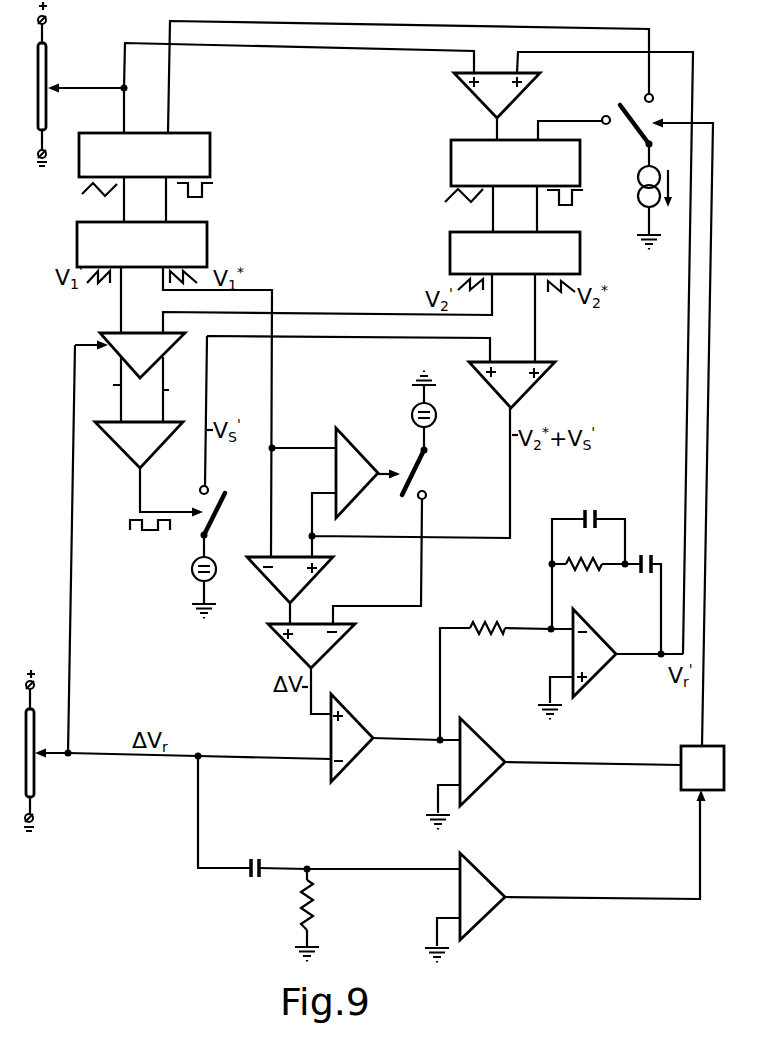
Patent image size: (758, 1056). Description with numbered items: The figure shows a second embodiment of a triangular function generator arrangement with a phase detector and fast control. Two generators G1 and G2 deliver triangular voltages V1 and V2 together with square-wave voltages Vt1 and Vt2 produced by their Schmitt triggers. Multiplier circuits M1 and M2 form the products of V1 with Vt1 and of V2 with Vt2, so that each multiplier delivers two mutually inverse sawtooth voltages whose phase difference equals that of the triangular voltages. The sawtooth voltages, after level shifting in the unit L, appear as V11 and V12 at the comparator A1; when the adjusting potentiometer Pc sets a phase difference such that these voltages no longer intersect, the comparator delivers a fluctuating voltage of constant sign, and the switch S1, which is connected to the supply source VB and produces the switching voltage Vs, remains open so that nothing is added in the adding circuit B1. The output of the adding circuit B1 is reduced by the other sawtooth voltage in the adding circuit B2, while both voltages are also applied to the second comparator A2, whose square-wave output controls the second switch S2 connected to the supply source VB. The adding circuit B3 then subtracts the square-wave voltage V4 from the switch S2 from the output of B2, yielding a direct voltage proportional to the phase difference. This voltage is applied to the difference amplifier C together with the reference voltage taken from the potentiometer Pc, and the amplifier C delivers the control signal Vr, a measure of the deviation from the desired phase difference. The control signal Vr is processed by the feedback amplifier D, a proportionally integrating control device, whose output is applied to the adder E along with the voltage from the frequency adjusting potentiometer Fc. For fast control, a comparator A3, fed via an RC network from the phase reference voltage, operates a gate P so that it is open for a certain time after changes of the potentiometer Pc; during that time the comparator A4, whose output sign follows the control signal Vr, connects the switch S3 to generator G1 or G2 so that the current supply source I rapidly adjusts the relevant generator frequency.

The frequency adjusting potentiometer Fc is at (56, 50).
The generator G1 is at (152, 171).
The multiplier circuit M1 is at (153, 260).
The logic/comparator unit L is at (148, 361).
The comparator A1 is at (146, 452).
The switch S1 is at (217, 513).
The adder E is at (502, 105).
The generator G2 is at (519, 179).
The multiplier circuit M2 is at (522, 268).
The switch S3 is at (627, 124).
The current supply source I is at (660, 186).
The adding circuit B1 is at (518, 393).
The second comparator A2 is at (358, 481).
The second switch S2 is at (420, 477).
The supply source VB is at (444, 415).
The adding circuit B2 is at (295, 588).
The adding circuit B3 is at (315, 654).
The difference amplifier C is at (355, 753).
The amplifier D is at (595, 661).
The comparator A4 is at (485, 773).
The comparator A3 is at (484, 908).
The gate P is at (708, 776).
The adjusting potentiometer Pc is at (35, 779).
The triangular voltage V1 is at (86, 197).
The square-wave voltage Vt1 is at (209, 200).
The triangular voltage V2 is at (448, 204).
The square-wave voltage Vt2 is at (581, 207).
The sawtooth voltage V11 is at (106, 391).
The sawtooth voltage V12 is at (186, 391).
The switching voltage Vs is at (157, 506).
The voltage V4 is at (421, 570).
The control signal Vr is at (407, 723).